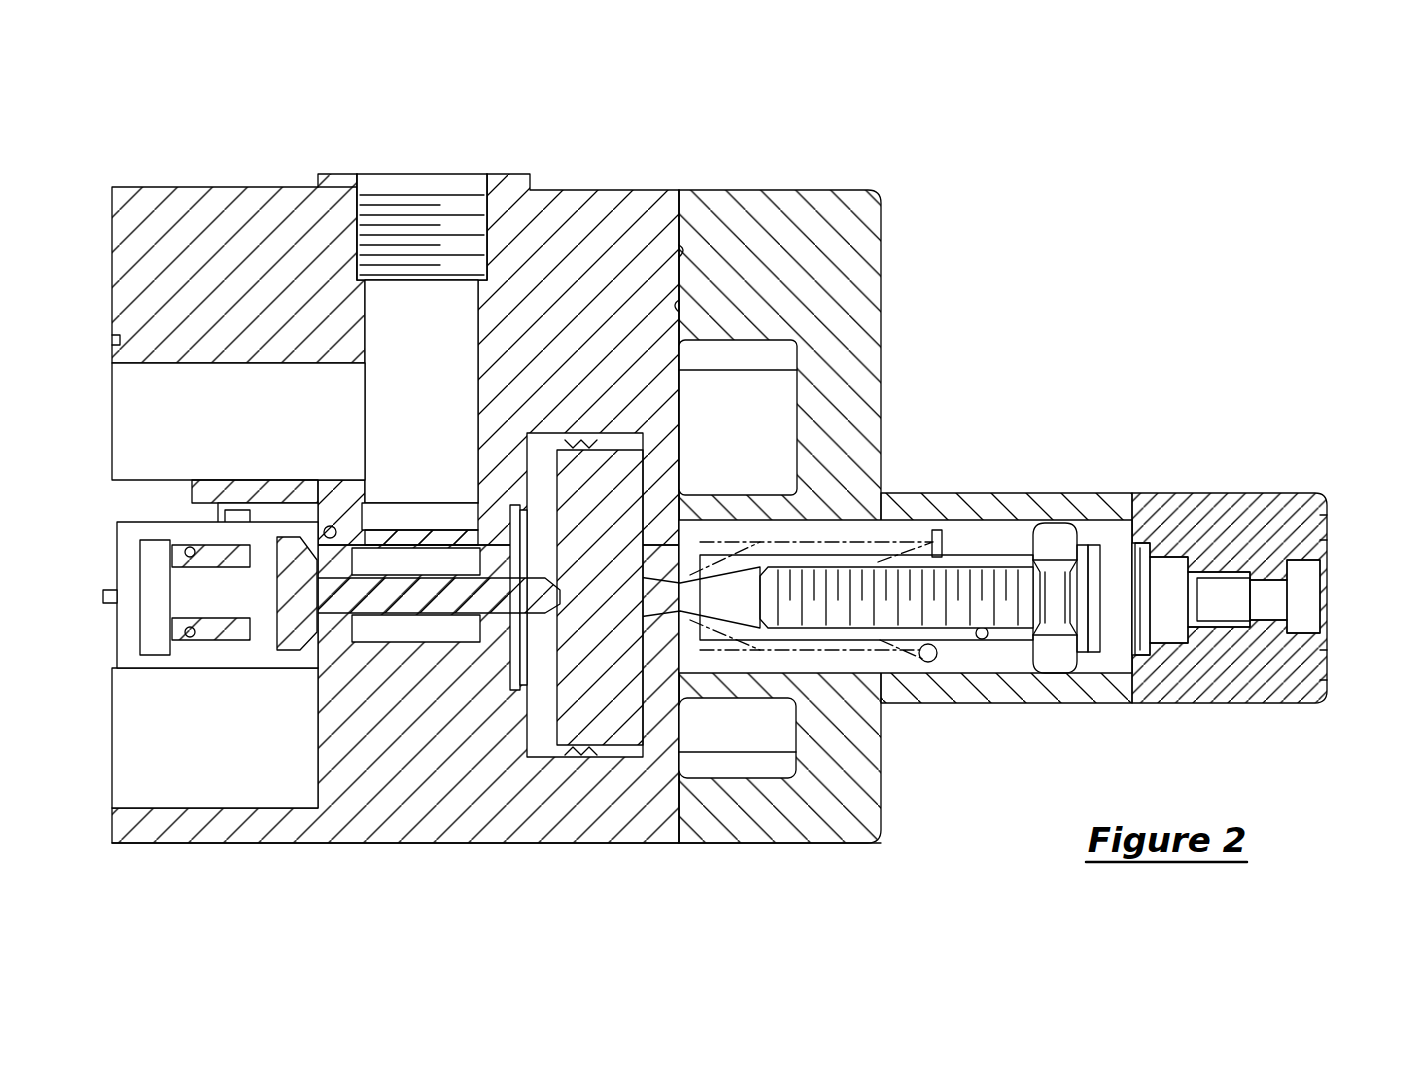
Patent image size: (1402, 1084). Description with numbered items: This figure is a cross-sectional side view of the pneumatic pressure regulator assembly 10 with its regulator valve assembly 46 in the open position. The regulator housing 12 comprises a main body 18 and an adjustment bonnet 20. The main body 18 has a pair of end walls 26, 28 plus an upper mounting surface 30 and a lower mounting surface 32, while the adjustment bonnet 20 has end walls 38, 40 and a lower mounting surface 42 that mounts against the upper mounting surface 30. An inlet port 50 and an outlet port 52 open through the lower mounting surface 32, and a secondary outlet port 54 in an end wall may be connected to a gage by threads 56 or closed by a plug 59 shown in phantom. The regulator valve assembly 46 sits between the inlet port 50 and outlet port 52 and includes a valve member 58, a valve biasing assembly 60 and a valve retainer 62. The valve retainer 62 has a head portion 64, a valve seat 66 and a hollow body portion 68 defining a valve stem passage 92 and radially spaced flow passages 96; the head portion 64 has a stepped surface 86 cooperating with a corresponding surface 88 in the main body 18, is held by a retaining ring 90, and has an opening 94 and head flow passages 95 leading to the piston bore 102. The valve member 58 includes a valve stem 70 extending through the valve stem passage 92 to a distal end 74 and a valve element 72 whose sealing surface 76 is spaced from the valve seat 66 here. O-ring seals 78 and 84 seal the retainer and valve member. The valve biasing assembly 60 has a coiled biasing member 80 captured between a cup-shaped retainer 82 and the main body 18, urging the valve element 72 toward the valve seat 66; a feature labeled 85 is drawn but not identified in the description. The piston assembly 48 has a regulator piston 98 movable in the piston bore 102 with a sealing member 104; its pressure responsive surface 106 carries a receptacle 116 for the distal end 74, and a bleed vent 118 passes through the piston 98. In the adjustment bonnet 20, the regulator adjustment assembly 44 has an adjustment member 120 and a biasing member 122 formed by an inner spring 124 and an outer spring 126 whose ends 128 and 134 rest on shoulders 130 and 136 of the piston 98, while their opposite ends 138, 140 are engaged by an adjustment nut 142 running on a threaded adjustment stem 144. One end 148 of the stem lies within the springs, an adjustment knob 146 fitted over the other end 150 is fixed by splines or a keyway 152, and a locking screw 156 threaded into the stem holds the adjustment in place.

The pneumatic pressure regulator assembly 10 is at (883, 185).
The regulator housing 12 is at (888, 280).
The main body 18 is at (182, 186).
The adjustment bonnet 20 is at (962, 493).
The end wall 26 is at (295, 186).
The end wall 28 is at (175, 843).
The upper mounting surface 30 is at (679, 250).
The lower mounting surface 32 is at (111, 277).
The end wall 38 is at (772, 188).
The end wall 40 is at (757, 843).
The lower mounting surface 42 is at (679, 312).
The regulator adjustment assembly 44 is at (1179, 476).
The regulator valve assembly 46 is at (335, 700).
The piston assembly 48 is at (677, 491).
The inlet port 50 is at (133, 786).
The outlet port 52 is at (138, 401).
The secondary outlet port 54 is at (408, 346).
The threads 56 is at (465, 212).
The valve member 58 is at (417, 656).
The plug 59 is at (418, 216).
The valve biasing assembly 60 is at (263, 521).
The valve retainer 62 is at (366, 528).
The head portion 64 is at (518, 530).
The valve seat 66 is at (333, 522).
The body portion 68 is at (449, 661).
The valve stem 70 is at (388, 580).
The valve element 72 is at (240, 640).
The distal end 74 is at (575, 587).
The sealing surface 76 is at (295, 651).
The O-ring seals 78 is at (340, 652).
The biasing member 80 is at (140, 585).
The cup-shaped retainer 82 is at (233, 531).
The O-ring seals 84 is at (180, 640).
The shaft end 85 is at (256, 602).
The stepped surface 86 is at (502, 529).
The corresponding surface 88 is at (521, 677).
The retaining ring 90 is at (520, 641).
The valve stem passage 92 is at (344, 661).
The opening 94 is at (462, 616).
The head flow passages 95 is at (470, 561).
The flow passages 96 is at (415, 510).
The regulator piston 98 is at (640, 760).
The piston bore 102 is at (628, 440).
The sealing member 104 is at (565, 740).
The pressure responsive surface 106 is at (660, 746).
The receptacle 116 is at (598, 600).
The bleed vent 118 is at (655, 592).
The adjustment member 120 is at (1137, 545).
The biasing member 122 is at (933, 671).
The inner concentric spring 124 is at (817, 563).
The outer concentric spring 126 is at (905, 520).
The end of inner spring 128 is at (640, 640).
The shoulder 130 is at (620, 572).
The end of outer spring 134 is at (640, 548).
The shoulder 136 is at (617, 647).
The opposite end of inner spring 138 is at (1048, 562).
The opposite end of outer spring 140 is at (982, 640).
The adjustment nut 142 is at (1055, 670).
The threaded adjustment stem 144 is at (963, 612).
The adjustment knob 146 is at (1247, 495).
The end of adjustment stem 148 is at (782, 594).
The other end of adjustment stem 150 is at (1126, 648).
The splines or keyway 152 is at (1220, 625).
The locking screw 156 is at (1325, 600).